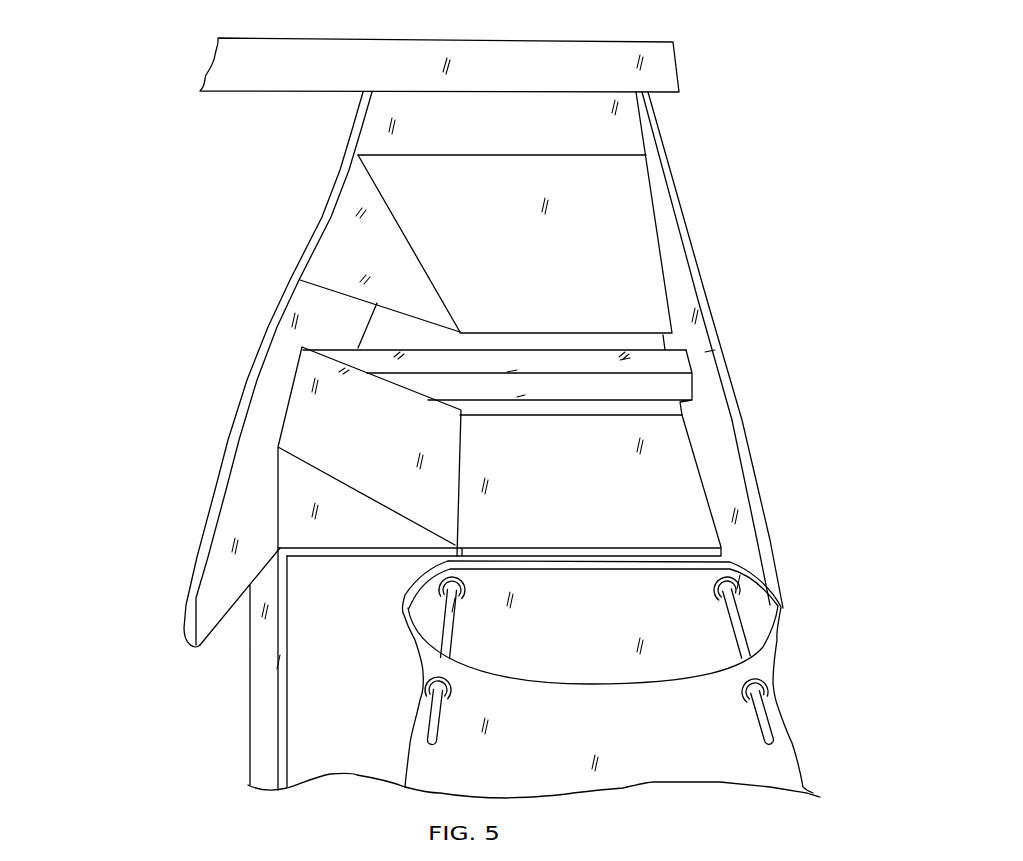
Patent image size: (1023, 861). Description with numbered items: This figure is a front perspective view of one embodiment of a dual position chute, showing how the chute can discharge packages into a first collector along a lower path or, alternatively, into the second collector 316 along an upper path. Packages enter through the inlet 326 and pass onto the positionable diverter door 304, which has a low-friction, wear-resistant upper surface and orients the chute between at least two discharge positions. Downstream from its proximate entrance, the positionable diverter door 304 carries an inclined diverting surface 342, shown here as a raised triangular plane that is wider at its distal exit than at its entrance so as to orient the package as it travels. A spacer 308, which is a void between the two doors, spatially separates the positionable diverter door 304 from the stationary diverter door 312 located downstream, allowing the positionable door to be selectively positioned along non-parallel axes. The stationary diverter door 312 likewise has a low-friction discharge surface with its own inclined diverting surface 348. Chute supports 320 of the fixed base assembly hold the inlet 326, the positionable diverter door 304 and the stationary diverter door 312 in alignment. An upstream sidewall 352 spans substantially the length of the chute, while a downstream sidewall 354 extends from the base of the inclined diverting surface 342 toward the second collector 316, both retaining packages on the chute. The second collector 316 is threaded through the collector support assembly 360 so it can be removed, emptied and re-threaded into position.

The positionable diverter door 304 is at (627, 240).
The spacer 308 is at (610, 340).
The stationary diverter door 312 is at (663, 482).
The second collector 316 is at (702, 717).
The chute support 320 is at (258, 663).
The inlet 326 is at (533, 127).
The inclined diverting surface 342 is at (372, 230).
The inclined diverting surface 348 is at (307, 437).
The upstream sidewall 352 is at (712, 403).
The downstream sidewall 354 is at (267, 357).
The collector support assembly 360 is at (445, 632).